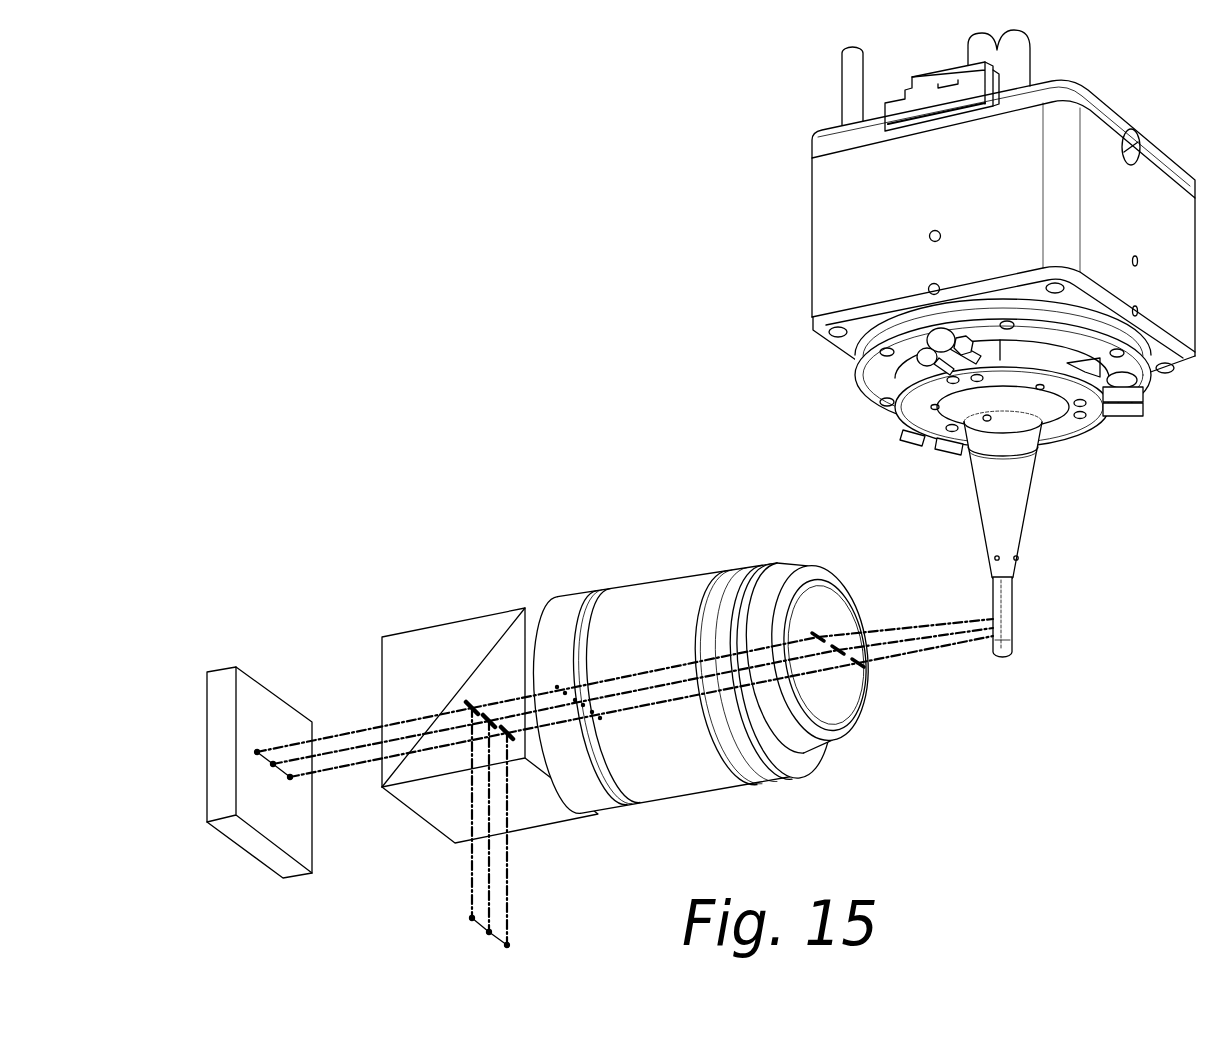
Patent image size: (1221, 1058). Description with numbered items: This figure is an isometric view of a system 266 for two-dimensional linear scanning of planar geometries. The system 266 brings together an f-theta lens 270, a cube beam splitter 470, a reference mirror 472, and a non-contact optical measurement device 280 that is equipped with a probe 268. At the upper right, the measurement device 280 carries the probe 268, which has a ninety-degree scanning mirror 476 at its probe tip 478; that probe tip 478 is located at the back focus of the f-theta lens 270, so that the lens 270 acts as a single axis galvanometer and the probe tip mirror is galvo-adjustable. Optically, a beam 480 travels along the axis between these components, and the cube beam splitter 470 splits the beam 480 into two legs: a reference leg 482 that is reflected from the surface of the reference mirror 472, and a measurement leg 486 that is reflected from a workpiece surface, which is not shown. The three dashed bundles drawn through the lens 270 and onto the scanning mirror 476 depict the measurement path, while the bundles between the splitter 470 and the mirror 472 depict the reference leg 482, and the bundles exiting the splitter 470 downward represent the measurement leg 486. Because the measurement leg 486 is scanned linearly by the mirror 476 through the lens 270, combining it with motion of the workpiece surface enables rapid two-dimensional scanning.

The system 266 is at (436, 264).
The probe 268 is at (1050, 500).
The f-theta lens 270 is at (657, 583).
The non-contact optical measurement device 280 is at (945, 343).
The cube beam splitter 470 is at (445, 623).
The reference mirror 472 is at (220, 670).
The 90° scanning mirror 476 is at (1008, 637).
The probe tip 478 is at (968, 592).
The beam 480 is at (543, 688).
The reference leg 482 is at (330, 772).
The measurement leg 486 is at (507, 874).